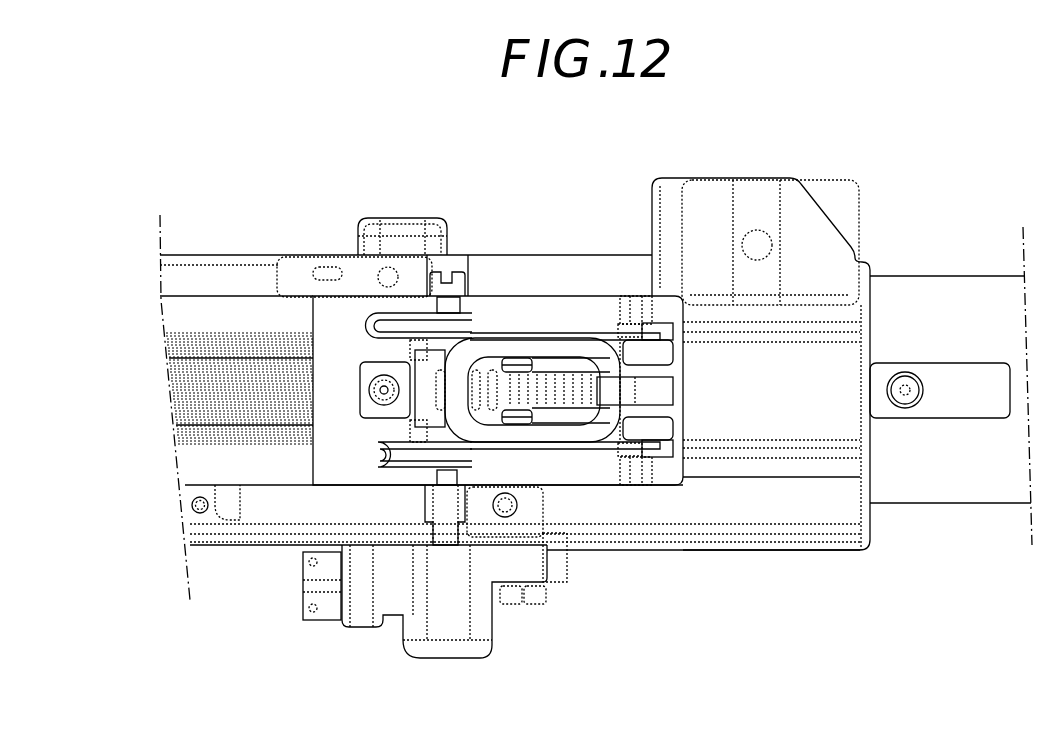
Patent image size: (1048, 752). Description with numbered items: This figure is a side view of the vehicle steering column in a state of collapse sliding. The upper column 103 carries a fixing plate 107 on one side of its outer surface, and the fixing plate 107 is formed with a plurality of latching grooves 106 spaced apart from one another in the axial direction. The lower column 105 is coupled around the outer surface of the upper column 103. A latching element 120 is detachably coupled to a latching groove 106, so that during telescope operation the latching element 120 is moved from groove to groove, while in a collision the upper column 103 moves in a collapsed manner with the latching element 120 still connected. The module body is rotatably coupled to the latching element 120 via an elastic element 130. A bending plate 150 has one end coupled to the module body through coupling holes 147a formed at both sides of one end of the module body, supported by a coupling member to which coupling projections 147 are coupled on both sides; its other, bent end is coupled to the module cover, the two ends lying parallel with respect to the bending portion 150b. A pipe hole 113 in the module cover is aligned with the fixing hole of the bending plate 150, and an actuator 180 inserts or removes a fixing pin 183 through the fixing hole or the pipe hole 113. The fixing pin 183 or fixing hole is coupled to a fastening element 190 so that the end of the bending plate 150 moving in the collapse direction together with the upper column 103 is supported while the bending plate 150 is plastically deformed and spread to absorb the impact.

The upper column 103 is at (922, 298).
The lower column 105 is at (204, 275).
The latching groove 106 is at (510, 358).
The fixing plate 107 is at (430, 363).
The pipe hole 113 is at (447, 475).
The latching element 120 is at (673, 423).
The elastic element 130 is at (540, 336).
The coupling projection 147 is at (633, 452).
The coupling hole 147a is at (657, 393).
The bending plate 150 is at (541, 336).
The bending portion 150b is at (367, 325).
The actuator 180 is at (443, 625).
The fixing pin 183 is at (427, 507).
The fastening element 190 is at (437, 273).